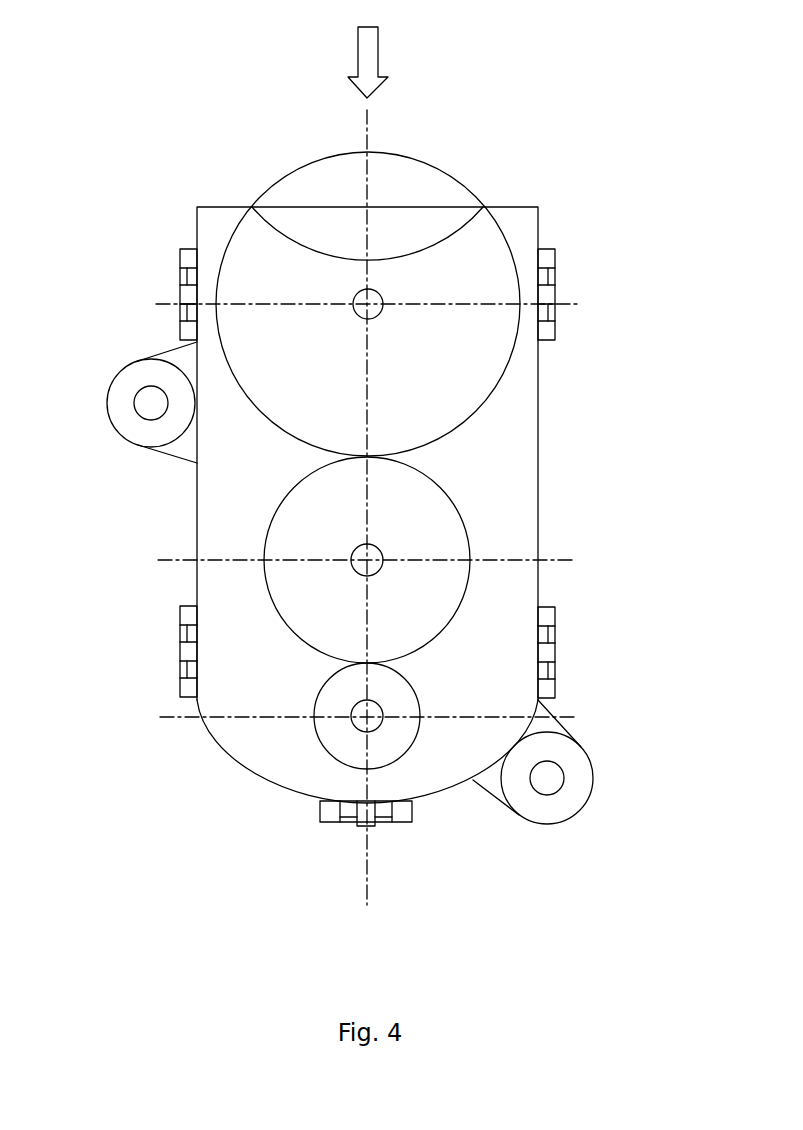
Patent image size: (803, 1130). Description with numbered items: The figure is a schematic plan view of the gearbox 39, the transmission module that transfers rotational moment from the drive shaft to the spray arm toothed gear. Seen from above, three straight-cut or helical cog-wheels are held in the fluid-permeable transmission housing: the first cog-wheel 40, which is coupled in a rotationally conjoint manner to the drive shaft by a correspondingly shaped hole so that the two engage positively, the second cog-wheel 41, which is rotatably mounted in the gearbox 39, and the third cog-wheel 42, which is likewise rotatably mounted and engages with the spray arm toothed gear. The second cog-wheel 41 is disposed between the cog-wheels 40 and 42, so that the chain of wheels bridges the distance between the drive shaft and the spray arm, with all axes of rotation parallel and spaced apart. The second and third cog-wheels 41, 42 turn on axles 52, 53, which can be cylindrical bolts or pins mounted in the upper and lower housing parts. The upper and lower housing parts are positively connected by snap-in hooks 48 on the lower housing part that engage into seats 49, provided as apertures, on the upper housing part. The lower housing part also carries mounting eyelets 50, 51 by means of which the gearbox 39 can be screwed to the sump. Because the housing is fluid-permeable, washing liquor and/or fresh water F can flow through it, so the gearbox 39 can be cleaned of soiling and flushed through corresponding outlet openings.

The gearbox 39 is at (305, 130).
The first cog-wheel 40 is at (313, 733).
The second cog-wheel 41 is at (458, 506).
The third cog-wheel 42 is at (500, 383).
The snap-in hooks 48 is at (190, 295).
The seats 49 is at (190, 313).
The mounting eyelet 50 is at (107, 403).
The mounting eyelet 51 is at (592, 798).
The axle 52 is at (383, 551).
The axle 53 is at (383, 296).
The fresh water F is at (380, 53).